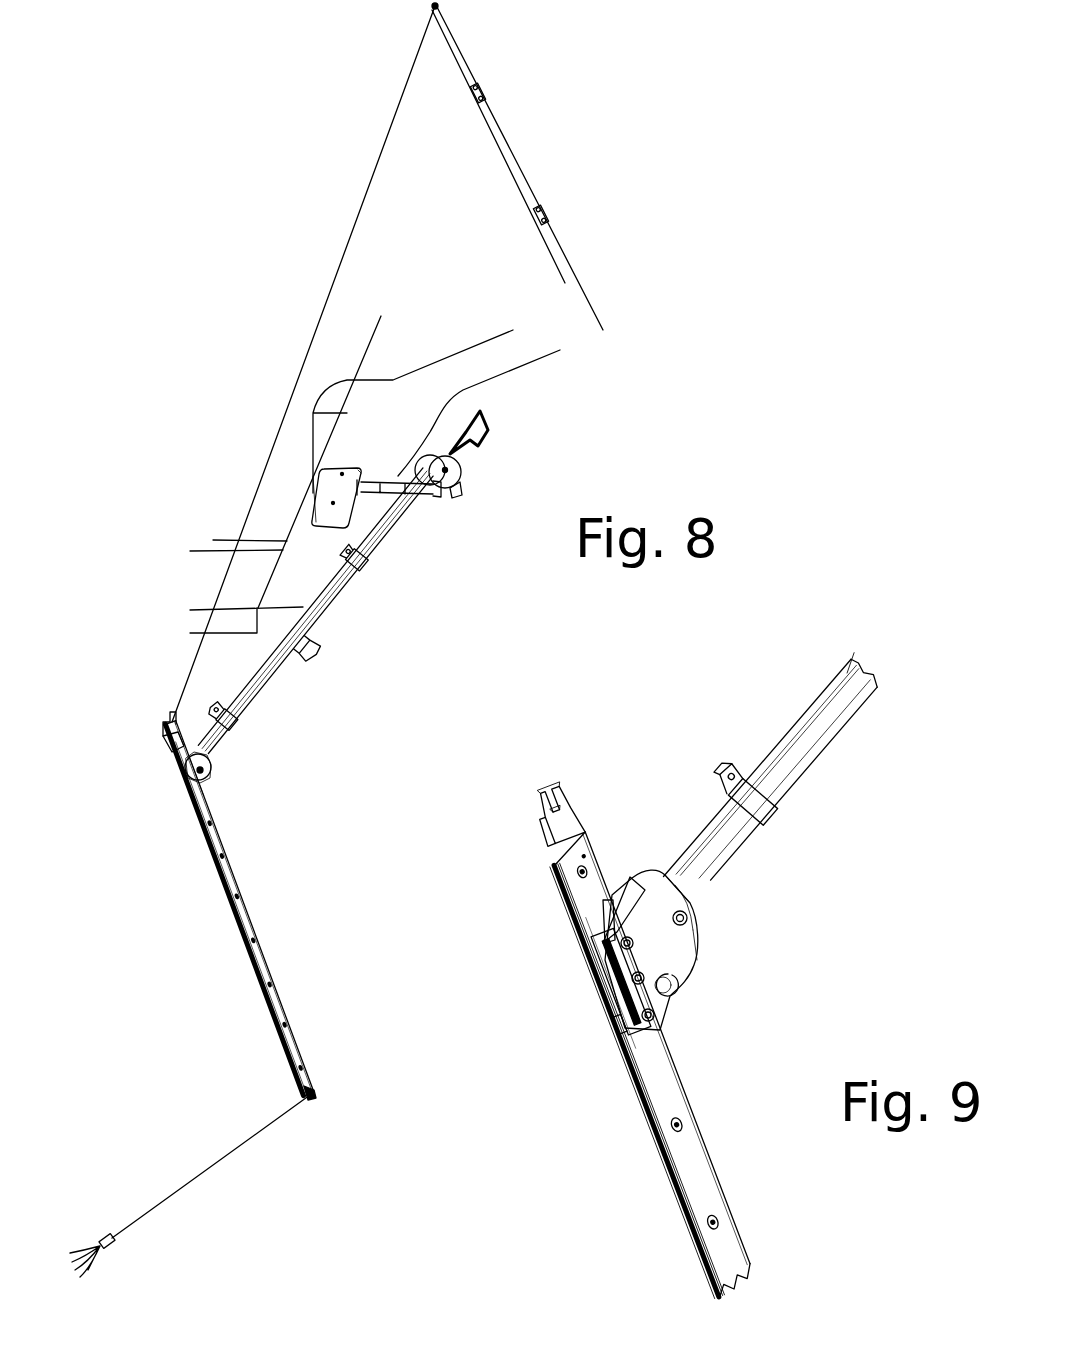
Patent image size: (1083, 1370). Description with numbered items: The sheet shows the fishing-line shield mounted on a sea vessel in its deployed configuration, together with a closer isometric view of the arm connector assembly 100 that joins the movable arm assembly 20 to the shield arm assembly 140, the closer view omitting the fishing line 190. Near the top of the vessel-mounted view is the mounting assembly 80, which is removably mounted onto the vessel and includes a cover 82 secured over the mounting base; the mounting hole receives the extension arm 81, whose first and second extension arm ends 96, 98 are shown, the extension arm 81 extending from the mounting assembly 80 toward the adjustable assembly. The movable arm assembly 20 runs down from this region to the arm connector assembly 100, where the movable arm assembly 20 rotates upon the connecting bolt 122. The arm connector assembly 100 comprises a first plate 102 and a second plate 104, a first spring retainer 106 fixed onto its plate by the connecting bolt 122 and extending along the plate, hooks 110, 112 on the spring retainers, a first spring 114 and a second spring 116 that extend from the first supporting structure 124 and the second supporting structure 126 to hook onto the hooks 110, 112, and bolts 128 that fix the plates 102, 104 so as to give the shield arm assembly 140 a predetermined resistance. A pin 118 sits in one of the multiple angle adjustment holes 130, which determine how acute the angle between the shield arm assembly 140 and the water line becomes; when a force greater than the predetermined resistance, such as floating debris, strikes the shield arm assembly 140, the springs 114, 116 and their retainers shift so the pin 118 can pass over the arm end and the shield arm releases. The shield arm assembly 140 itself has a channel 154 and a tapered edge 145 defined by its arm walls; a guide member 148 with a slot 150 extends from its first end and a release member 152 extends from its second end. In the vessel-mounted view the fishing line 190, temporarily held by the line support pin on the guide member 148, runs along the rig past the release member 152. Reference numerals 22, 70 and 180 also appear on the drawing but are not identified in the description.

In FIG. 8, the movable arm assembly 20 is at (377, 610).
In FIG. 9, the movable arm assembly 20 is at (807, 684).
In FIG. 8, the tube clamp 22 is at (307, 662).
In FIG. 9, the tube clamp 22 is at (830, 743).
In FIG. 8, the clamp 70 is at (445, 489).
In FIG. 8, the mounting assembly 80 is at (391, 458).
In FIG. 8, the extension arm 81 is at (372, 478).
In FIG. 8, the cover 82 is at (331, 445).
In FIG. 8, the first extension arm end 96 is at (320, 480).
In FIG. 8, the second extension arm end 98 is at (463, 483).
In FIG. 8, the arm connector assembly 100 is at (219, 808).
In FIG. 9, the arm connector assembly 100 is at (846, 918).
In FIG. 9, the first plate 102 is at (700, 950).
In FIG. 9, the second plate 104 is at (634, 890).
In FIG. 9, the first spring retainer 106 is at (667, 900).
In FIG. 9, the hook 110 is at (604, 898).
In FIG. 9, the hook 112 is at (584, 942).
In FIG. 9, the first spring 114 is at (656, 995).
In FIG. 9, the second spring 116 is at (586, 965).
In FIG. 9, the pin 118 is at (682, 960).
In FIG. 8, the connecting bolt 122 is at (218, 762).
In FIG. 9, the connecting bolt 122 is at (690, 920).
In FIG. 9, the first supporting structure 124 is at (650, 1020).
In FIG. 9, the second supporting structure 126 is at (616, 1040).
In FIG. 9, the bolts 128 is at (602, 996).
In FIG. 9, the angle adjustment holes 130 is at (674, 987).
In FIG. 8, the shield arm assembly 140 is at (285, 972).
In FIG. 9, the shield arm assembly 140 is at (788, 1215).
In FIG. 8, the tapered edge 145 is at (298, 1037).
In FIG. 9, the tapered edge 145 is at (724, 1200).
In FIG. 8, the guide member 148 is at (170, 724).
In FIG. 9, the guide member 148 is at (568, 823).
In FIG. 8, the slot 150 is at (165, 728).
In FIG. 9, the slot 150 is at (548, 817).
In FIG. 8, the release member 152 is at (311, 1102).
In FIG. 8, the channel 154 is at (220, 860).
In FIG. 9, the channel 154 is at (682, 1197).
In FIG. 8, the rod 180 is at (556, 166).
In FIG. 8, the fishing line 190 is at (322, 212).